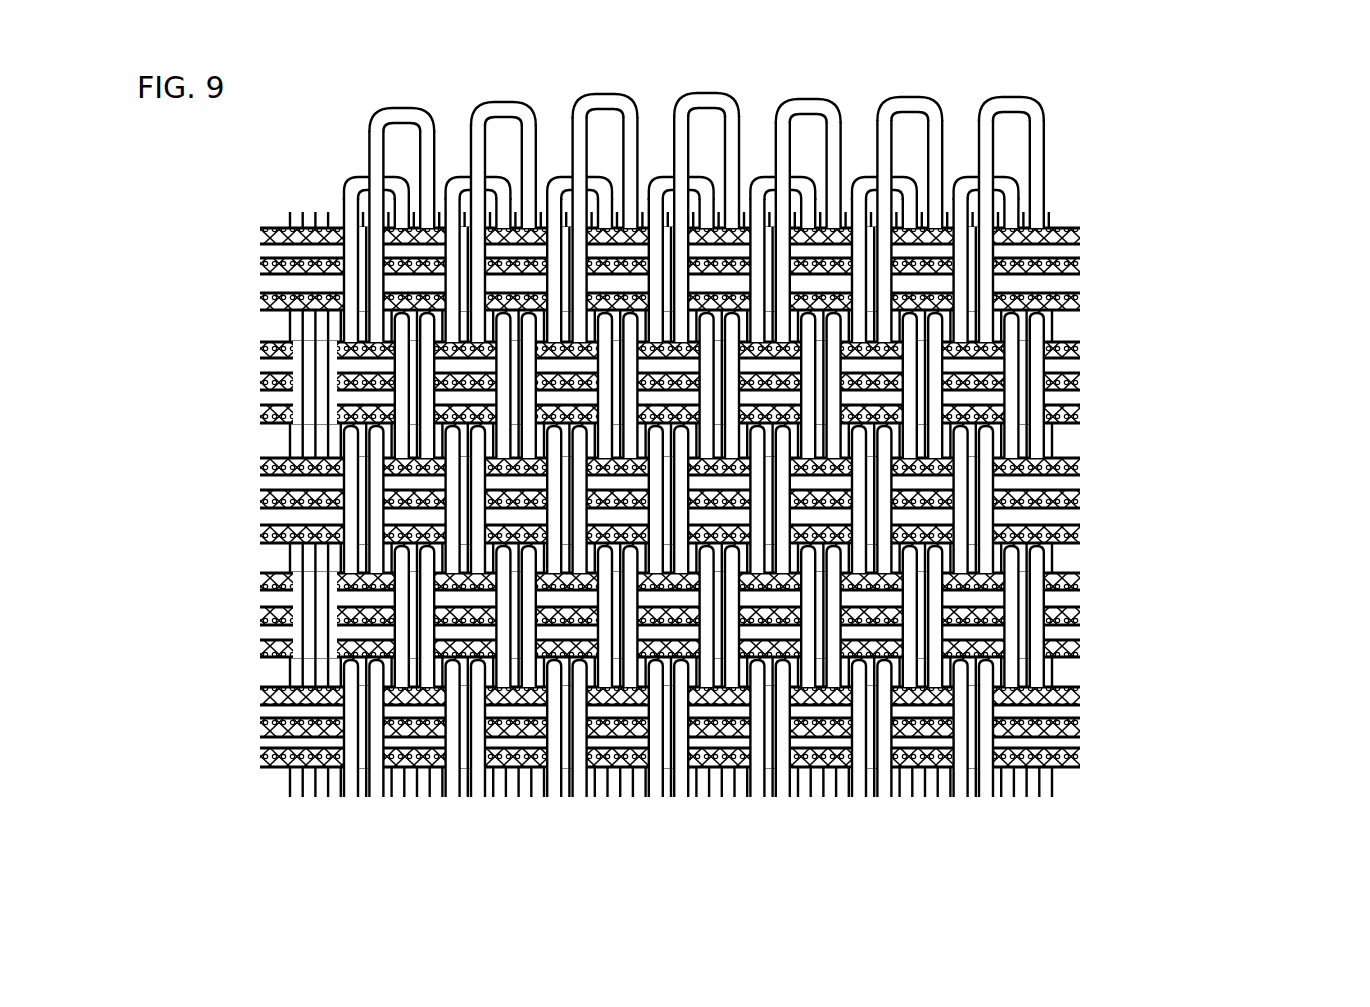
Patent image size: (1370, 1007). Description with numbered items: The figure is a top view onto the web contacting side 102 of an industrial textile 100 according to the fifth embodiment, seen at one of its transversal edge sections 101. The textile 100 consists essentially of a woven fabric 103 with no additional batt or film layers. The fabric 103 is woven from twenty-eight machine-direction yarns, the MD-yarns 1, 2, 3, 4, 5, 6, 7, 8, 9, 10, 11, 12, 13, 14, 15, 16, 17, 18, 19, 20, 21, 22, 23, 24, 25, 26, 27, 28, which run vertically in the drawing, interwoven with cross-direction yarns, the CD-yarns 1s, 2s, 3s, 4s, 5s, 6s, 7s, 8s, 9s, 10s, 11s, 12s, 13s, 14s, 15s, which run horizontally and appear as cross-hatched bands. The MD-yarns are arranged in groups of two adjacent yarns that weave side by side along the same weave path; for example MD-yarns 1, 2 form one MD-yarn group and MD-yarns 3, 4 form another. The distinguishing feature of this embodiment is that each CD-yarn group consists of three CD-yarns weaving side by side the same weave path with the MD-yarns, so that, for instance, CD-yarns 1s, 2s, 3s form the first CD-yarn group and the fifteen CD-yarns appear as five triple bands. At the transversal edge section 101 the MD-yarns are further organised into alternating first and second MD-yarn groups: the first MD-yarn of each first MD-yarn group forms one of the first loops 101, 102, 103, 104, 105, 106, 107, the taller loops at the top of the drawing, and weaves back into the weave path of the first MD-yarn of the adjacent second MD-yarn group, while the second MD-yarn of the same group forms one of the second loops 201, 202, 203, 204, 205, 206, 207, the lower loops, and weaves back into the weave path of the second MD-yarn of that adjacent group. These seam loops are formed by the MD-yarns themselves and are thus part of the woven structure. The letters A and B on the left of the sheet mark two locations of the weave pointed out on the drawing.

The industrial textile 100 is at (1291, 112).
The transversal edge section 101 is at (780, 126).
The web contacting side 102 is at (845, 217).
The fabric 103 is at (906, 285).
The first loop 104 is at (736, 78).
The first loop 105 is at (834, 76).
The first loop 106 is at (931, 80).
The first loop 107 is at (1041, 100).
The second loop 201 is at (358, 165).
The second loop 202 is at (481, 133).
The second loop 203 is at (579, 154).
The second loop 204 is at (690, 121).
The second loop 205 is at (794, 131).
The second loop 206 is at (884, 132).
The second loop 207 is at (1010, 116).
The region A is at (230, 438).
The region B is at (231, 358).
The MD-yarn 1 is at (349, 520).
The MD-yarn 2 is at (374, 487).
The MD-yarn 3 is at (400, 520).
The MD-yarn 4 is at (425, 487).
The MD-yarn 5 is at (451, 520).
The MD-yarn 6 is at (476, 484).
The MD-yarn 7 is at (501, 520).
The MD-yarn 8 is at (527, 484).
The MD-yarn 9 is at (552, 520).
The MD-yarn 10 is at (578, 480).
The MD-yarn 11 is at (593, 538).
The MD-yarn 12 is at (628, 480).
The MD-yarn 13 is at (649, 538).
The MD-yarn 14 is at (679, 479).
The MD-yarn 15 is at (700, 538).
The MD-yarn 16 is at (730, 479).
The MD-yarn 17 is at (750, 538).
The MD-yarn 18 is at (781, 482).
The MD-yarn 19 is at (801, 538).
The MD-yarn 20 is at (832, 482).
The MD-yarn 21 is at (852, 538).
The MD-yarn 22 is at (882, 481).
The MD-yarn 23 is at (903, 538).
The MD-yarn 24 is at (933, 481).
The MD-yarn 25 is at (954, 538).
The MD-yarn 26 is at (984, 481).
The MD-yarn 27 is at (1004, 538).
The MD-yarn 28 is at (1030, 499).
The CD-yarn 1s is at (649, 758).
The CD-yarn 2s is at (649, 728).
The CD-yarn 3s is at (649, 696).
The CD-yarn 4s is at (649, 649).
The CD-yarn 5s is at (649, 616).
The CD-yarn 6s is at (649, 582).
The CD-yarn 7s is at (649, 534).
The CD-yarn 8s is at (649, 499).
The CD-yarn 9s is at (649, 467).
The CD-yarn 10s is at (643, 414).
The CD-yarn 11s is at (643, 382).
The CD-yarn 12s is at (643, 350).
The CD-yarn 13s is at (643, 302).
The CD-yarn 14s is at (643, 266).
The CD-yarn 15s is at (643, 236).